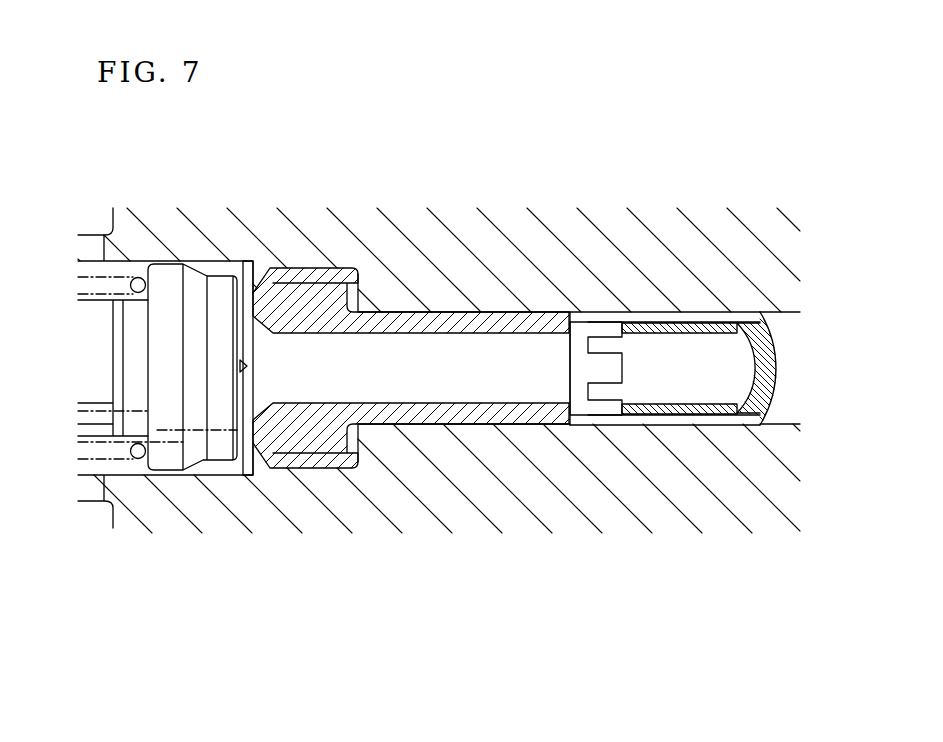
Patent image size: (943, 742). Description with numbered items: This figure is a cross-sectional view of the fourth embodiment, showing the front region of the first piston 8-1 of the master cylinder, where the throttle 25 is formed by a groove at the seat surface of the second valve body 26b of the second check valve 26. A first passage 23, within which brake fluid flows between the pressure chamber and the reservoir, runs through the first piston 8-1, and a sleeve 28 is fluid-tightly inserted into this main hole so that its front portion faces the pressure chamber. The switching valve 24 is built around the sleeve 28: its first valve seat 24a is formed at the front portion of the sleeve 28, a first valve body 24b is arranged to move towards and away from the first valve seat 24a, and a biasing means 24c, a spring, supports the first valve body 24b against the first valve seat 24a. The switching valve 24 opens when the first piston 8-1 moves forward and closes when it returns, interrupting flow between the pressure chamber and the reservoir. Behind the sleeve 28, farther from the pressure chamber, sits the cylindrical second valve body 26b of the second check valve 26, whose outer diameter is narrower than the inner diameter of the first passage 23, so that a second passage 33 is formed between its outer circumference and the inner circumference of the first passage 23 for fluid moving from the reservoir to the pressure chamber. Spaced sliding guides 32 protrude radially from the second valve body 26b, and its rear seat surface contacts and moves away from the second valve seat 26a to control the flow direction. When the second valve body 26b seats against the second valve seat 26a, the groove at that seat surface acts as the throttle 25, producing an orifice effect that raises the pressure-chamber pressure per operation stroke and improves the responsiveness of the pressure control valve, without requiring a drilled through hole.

The first piston 8-1 is at (428, 240).
The sleeve 28 is at (382, 320).
The switching valve 24 is at (184, 479).
The first valve seat 24a is at (249, 475).
The first valve body 24b is at (191, 467).
The biasing means 24c is at (131, 453).
The sliding guides 32 is at (604, 332).
The second check valve 26 is at (701, 249).
The second valve seat 26a is at (768, 320).
The second valve body 26b is at (752, 327).
The second passage 33 is at (631, 425).
The first passage 23 is at (783, 358).
The throttle 25 is at (772, 393).